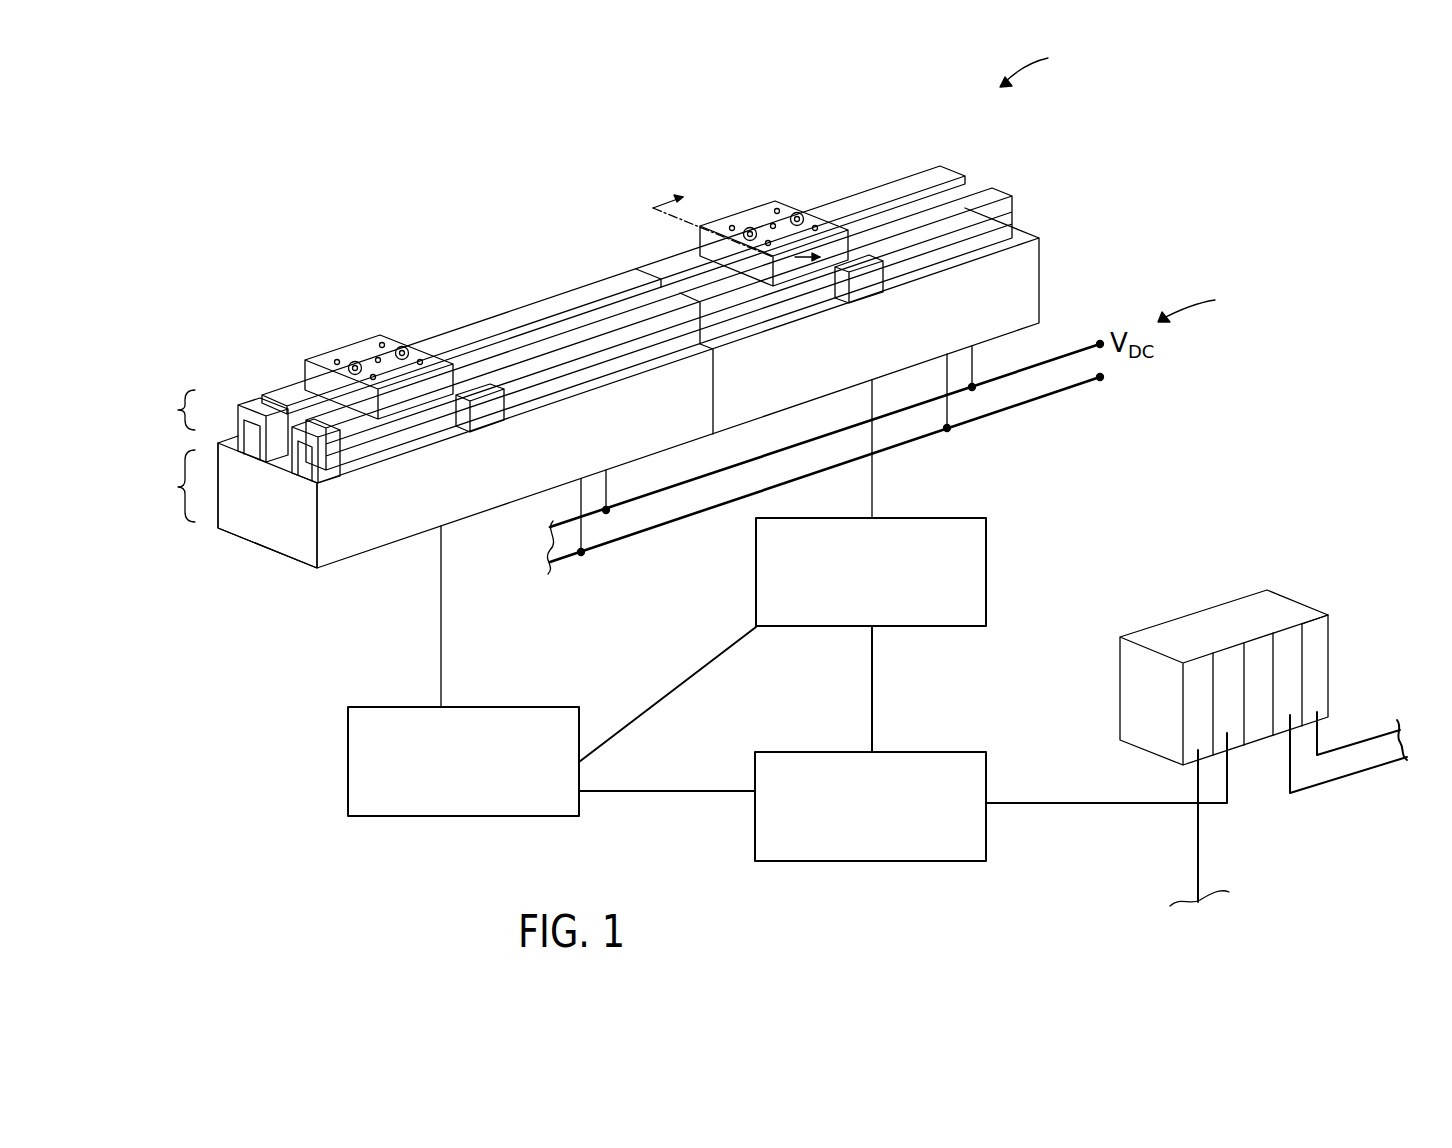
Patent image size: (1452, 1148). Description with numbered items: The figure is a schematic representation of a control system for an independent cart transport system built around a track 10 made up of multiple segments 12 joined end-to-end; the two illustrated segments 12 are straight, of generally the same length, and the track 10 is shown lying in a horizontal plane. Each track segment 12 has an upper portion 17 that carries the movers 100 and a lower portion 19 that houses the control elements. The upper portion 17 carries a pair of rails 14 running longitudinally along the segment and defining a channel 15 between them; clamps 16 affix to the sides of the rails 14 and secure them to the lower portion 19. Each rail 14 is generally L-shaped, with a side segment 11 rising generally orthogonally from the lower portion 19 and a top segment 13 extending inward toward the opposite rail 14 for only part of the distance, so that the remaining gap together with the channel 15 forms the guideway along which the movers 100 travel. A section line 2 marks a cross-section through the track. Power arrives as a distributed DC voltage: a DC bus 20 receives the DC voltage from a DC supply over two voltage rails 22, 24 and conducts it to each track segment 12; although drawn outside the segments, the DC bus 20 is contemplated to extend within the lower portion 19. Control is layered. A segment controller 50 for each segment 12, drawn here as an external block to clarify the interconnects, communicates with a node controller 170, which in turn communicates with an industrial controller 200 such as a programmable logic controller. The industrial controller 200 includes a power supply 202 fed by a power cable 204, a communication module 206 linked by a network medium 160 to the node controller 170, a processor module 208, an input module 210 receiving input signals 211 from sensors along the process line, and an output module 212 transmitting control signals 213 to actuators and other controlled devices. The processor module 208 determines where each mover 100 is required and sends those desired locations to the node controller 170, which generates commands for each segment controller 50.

The track 10 is at (1039, 65).
The side segment 11 is at (240, 422).
The segment 12 is at (623, 439).
The top segment 13 is at (318, 422).
The rail 14 is at (948, 171).
The channel 15 is at (277, 460).
The clamp 16 is at (488, 406).
The upper portion 17 is at (169, 410).
The lower portion 19 is at (169, 486).
The section line 2 is at (744, 217).
The DC bus 20 is at (1202, 303).
The voltage rail 22 is at (1100, 342).
The voltage rail 24 is at (1105, 382).
The segment controller 50 is at (945, 517).
The mover 100 is at (362, 352).
The network medium 160 is at (666, 677).
The node controller 170 is at (766, 862).
The industrial controller 200 is at (1188, 628).
The power supply 202 is at (1190, 660).
The power cable 204 is at (1198, 865).
The communication module 206 is at (1223, 663).
The processor module 208 is at (1262, 650).
The input module 210 is at (1288, 642).
The input signals 211 is at (1342, 780).
The output module 212 is at (1317, 628).
The control signals 213 is at (1360, 733).